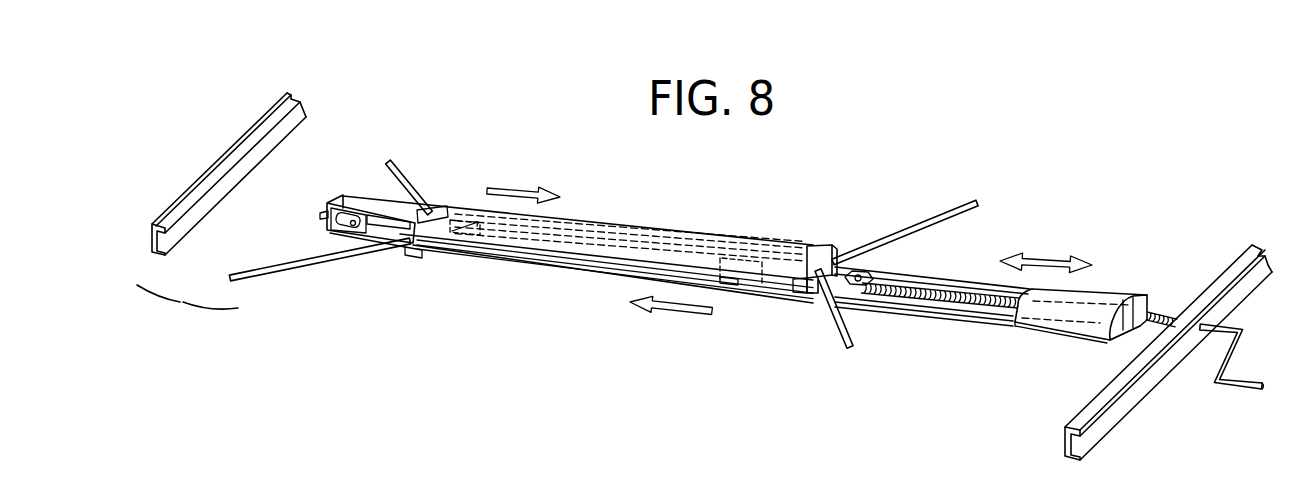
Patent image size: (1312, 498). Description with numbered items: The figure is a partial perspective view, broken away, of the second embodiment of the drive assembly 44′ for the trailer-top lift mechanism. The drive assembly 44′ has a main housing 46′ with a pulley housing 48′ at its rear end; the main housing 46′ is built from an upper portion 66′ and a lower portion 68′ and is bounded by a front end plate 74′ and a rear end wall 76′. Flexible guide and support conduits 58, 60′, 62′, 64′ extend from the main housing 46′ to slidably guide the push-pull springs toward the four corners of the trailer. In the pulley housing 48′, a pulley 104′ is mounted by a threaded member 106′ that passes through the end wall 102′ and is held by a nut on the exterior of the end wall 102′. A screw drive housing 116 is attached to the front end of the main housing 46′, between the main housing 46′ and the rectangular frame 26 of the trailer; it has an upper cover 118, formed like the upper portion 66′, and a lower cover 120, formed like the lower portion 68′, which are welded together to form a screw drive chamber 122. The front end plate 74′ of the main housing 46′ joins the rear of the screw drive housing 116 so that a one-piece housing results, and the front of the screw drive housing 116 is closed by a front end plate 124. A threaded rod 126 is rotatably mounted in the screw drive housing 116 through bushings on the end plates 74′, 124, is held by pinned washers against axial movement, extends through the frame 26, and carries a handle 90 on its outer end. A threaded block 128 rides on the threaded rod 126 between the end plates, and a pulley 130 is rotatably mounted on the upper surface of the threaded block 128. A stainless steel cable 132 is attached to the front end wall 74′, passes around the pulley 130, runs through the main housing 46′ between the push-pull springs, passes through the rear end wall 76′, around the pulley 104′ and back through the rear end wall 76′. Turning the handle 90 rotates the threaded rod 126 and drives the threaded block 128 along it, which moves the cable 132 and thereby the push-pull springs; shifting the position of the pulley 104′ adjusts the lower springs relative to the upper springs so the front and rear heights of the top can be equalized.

The rectangular frame 26 is at (202, 178).
The drive assembly 44′ is at (905, 186).
The main housing 46′ is at (578, 246).
The pulley housing 48′ is at (374, 222).
The guide and support conduit 58 is at (845, 345).
The guide and support conduit 60′ is at (940, 215).
The guide and support conduit 62′ is at (287, 279).
The guide and support conduit 64′ is at (410, 171).
The upper portion of the main housing 66′ is at (809, 269).
The lower portion of the main housing 68′ is at (550, 274).
The front end plate 74′ is at (817, 283).
The rear end wall 76′ is at (420, 257).
The handle 90 is at (1215, 386).
The end wall 102′ is at (328, 225).
The pulley 104′ is at (348, 238).
The threaded member 106′ is at (322, 216).
The screw drive housing 116 is at (1103, 325).
The upper cover 118 is at (965, 330).
The lower cover 120 is at (1043, 306).
The screw drive chamber 122 is at (1120, 327).
The front end plate 124 is at (1122, 290).
The threaded rod 126 is at (987, 298).
The threaded block 128 is at (892, 267).
The pulley 130 is at (855, 297).
The cable 132 is at (387, 233).